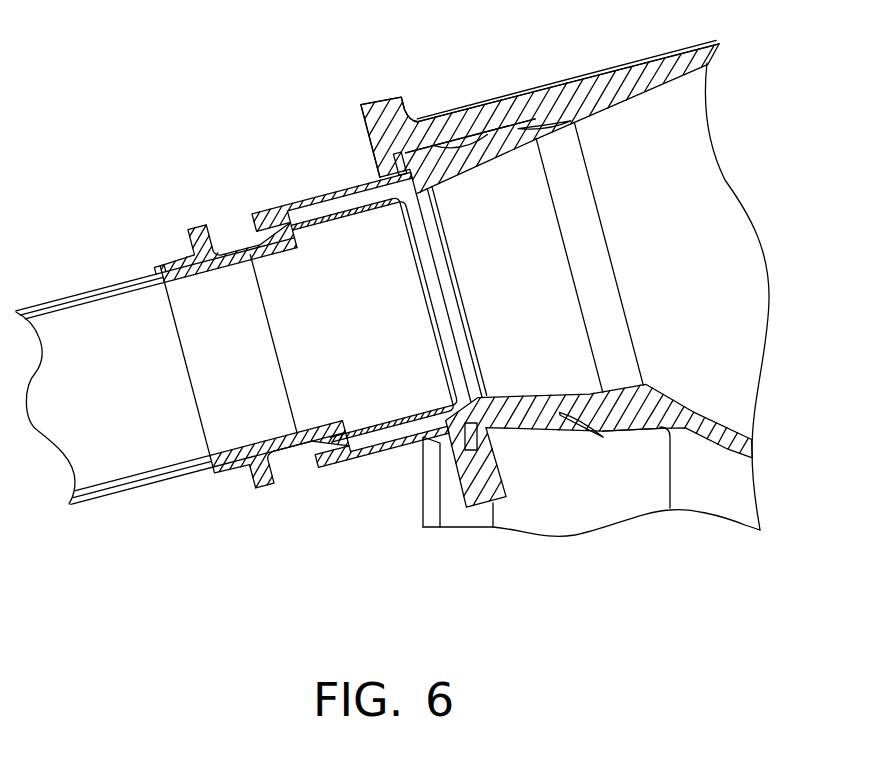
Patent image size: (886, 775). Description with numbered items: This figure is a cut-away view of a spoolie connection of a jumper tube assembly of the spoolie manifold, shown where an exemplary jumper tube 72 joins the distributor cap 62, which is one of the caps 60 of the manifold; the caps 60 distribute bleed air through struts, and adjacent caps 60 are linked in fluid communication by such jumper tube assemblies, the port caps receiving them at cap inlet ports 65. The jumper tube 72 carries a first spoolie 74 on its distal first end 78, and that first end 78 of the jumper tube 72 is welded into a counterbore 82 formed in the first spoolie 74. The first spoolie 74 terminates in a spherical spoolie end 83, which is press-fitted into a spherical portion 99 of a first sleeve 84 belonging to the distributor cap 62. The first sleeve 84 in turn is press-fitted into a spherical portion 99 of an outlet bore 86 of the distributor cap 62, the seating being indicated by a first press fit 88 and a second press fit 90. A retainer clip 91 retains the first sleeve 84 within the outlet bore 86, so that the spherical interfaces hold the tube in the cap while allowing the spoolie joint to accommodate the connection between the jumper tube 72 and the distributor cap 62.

The cap 60 is at (522, 93).
The distributor cap 62 is at (620, 66).
The cap inlet port 65 is at (485, 103).
The retainer clip 91 is at (398, 100).
The first sleeve 84 is at (363, 187).
The first spoolie 74 is at (250, 223).
The first end 78 is at (157, 270).
The jumper tube 72 is at (88, 500).
The counterbore 82 is at (204, 464).
The spherical portion 99 is at (463, 400).
The spherical spoolie end 83 is at (408, 423).
The outlet bore 86 is at (455, 440).
The first press fit 88 is at (503, 460).
The second press fit 90 is at (606, 435).